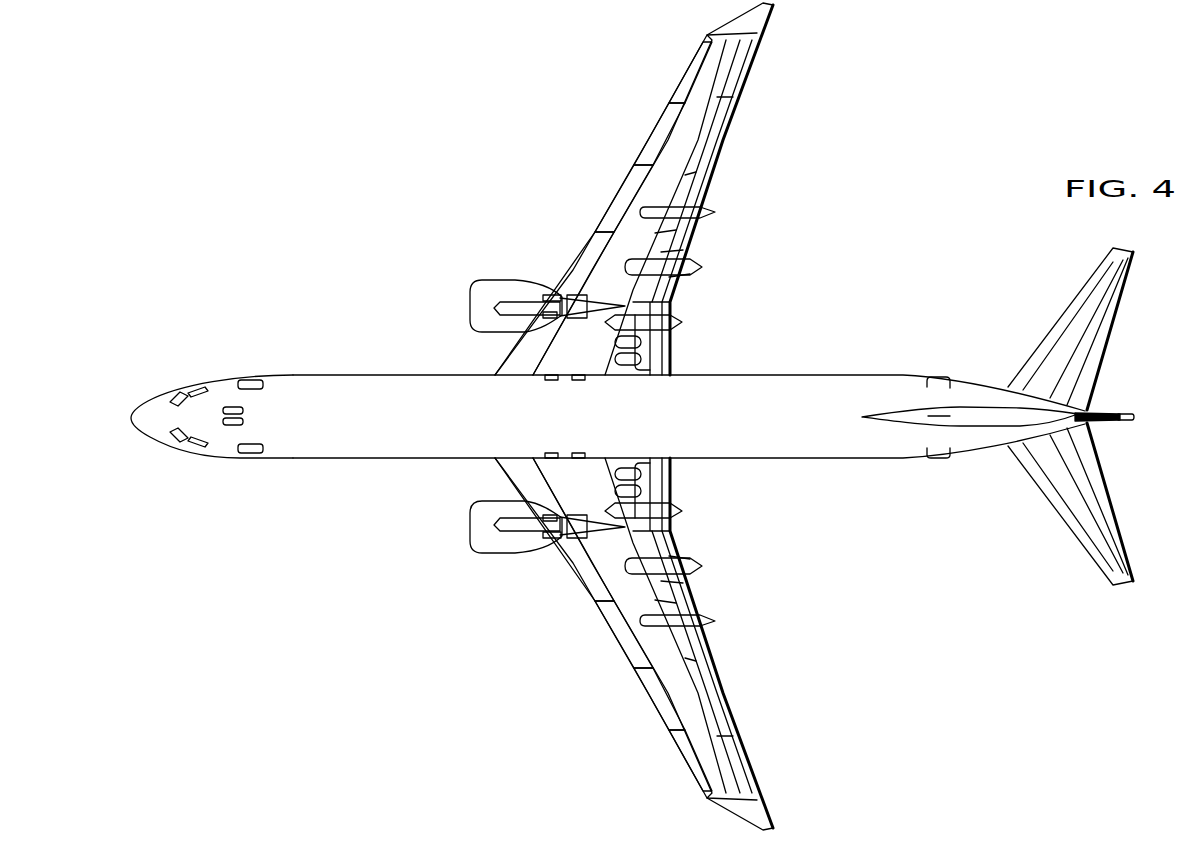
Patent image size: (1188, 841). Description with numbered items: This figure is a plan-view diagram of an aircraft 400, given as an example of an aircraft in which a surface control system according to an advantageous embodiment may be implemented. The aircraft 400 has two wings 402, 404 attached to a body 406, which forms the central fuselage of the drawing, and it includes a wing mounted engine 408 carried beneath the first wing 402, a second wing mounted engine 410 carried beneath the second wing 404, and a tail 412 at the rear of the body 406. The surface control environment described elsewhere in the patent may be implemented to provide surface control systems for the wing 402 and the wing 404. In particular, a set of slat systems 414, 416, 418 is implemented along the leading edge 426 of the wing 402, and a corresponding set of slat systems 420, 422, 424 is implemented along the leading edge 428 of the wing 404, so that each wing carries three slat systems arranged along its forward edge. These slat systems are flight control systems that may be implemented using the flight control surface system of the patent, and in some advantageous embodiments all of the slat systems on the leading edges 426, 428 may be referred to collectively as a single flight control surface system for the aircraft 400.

The aircraft 400 is at (326, 136).
The wing 402 is at (748, 110).
The wing 404 is at (748, 730).
The body 406 is at (328, 383).
The wing mounted engine 408 is at (470, 308).
The wing mounted engine 410 is at (470, 536).
The tail 412 is at (1070, 327).
The slat system 414 is at (697, 70).
The slat system 416 is at (655, 133).
The slat system 418 is at (617, 207).
The slat system 420 is at (612, 627).
The slat system 422 is at (660, 700).
The slat system 424 is at (698, 765).
The leading edge 426 is at (508, 358).
The leading edge 428 is at (508, 475).